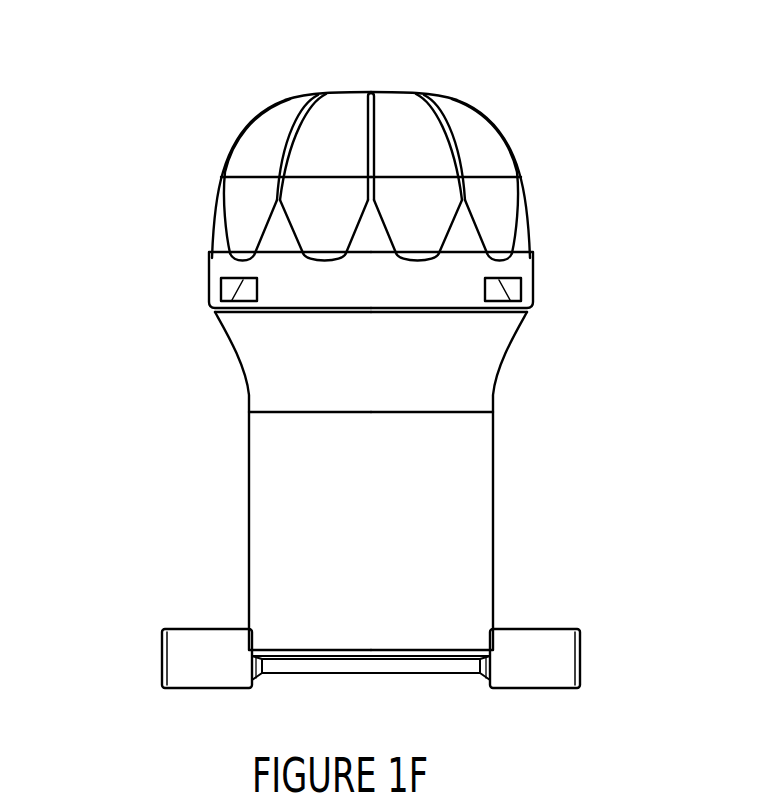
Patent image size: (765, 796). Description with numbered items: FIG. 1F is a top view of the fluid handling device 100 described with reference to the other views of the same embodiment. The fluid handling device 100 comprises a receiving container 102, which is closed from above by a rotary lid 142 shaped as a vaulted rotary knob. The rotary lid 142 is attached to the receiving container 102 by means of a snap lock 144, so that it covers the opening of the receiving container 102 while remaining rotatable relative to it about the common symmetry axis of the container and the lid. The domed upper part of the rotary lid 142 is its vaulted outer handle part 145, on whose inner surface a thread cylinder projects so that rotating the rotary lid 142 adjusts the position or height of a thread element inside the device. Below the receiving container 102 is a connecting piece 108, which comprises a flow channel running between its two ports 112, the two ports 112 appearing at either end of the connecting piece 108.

The fluid handling device 100 is at (371, 344).
The rotary lid 142 is at (414, 167).
The vaulted outer handle part 145 is at (525, 210).
The snap lock 144 is at (523, 286).
The receiving container 102 is at (495, 499).
The connecting piece 108 is at (537, 628).
The ports 112 is at (162, 665).